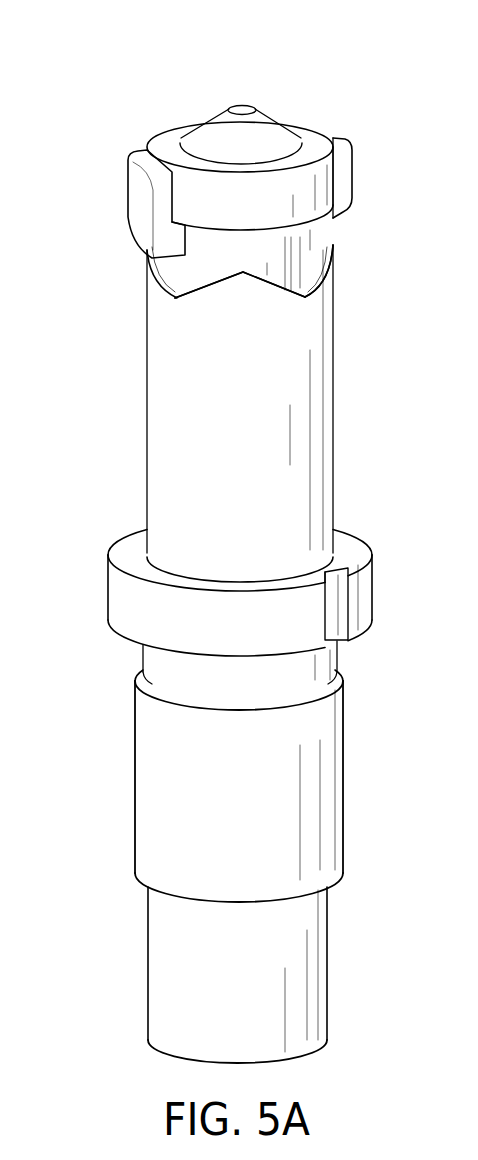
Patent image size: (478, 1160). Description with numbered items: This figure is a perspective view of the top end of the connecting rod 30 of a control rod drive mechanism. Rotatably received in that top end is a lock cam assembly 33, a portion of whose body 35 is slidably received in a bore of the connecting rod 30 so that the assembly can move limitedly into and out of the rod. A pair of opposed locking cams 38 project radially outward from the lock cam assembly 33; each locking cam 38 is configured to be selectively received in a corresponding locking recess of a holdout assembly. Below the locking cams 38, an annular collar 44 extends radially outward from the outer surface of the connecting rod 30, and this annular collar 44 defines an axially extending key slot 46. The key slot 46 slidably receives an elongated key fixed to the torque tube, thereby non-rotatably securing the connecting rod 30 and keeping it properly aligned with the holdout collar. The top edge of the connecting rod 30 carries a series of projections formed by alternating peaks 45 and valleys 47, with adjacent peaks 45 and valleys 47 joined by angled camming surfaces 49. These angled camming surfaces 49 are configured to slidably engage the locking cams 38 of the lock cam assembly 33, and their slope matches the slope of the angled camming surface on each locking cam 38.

The connecting rod 30 is at (120, 797).
The lock cam assembly 33 is at (182, 93).
The body 35 is at (285, 245).
The locking cam 38 is at (120, 203).
The annular collar 44 is at (98, 590).
The peak 45 is at (333, 245).
The key slot 46 is at (330, 606).
The valley 47 is at (305, 298).
The angled camming surface 49 is at (210, 287).